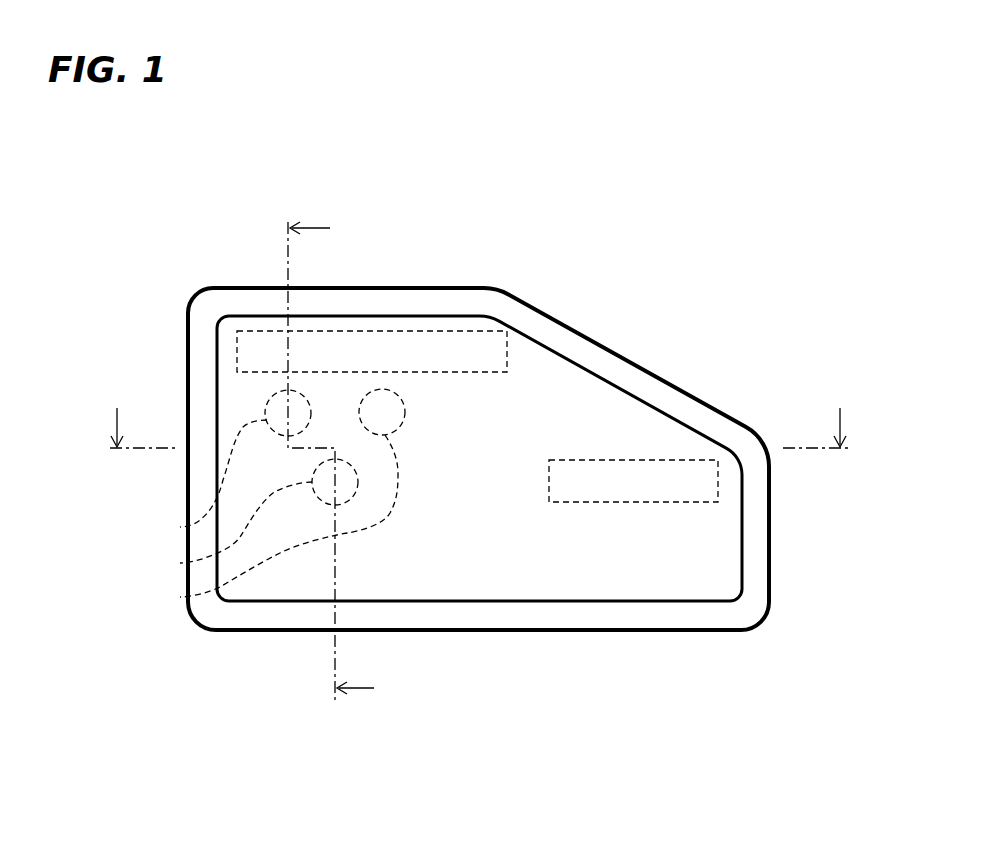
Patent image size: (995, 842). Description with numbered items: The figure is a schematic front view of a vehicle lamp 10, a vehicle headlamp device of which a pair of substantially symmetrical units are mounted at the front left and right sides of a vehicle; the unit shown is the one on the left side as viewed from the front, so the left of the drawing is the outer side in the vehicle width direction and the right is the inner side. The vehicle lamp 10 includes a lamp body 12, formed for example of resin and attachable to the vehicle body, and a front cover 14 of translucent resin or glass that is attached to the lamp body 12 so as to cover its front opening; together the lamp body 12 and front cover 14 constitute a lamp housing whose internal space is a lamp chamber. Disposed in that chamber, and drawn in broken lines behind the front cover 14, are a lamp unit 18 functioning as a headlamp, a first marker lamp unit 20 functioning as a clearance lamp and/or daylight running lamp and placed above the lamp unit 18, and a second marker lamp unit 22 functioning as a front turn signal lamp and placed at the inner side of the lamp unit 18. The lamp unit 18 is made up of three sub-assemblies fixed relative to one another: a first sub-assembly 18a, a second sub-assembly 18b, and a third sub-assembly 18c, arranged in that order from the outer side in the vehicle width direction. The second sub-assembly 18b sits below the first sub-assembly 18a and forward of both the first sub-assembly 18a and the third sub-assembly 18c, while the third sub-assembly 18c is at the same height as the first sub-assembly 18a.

The vehicle lamp 10 is at (466, 789).
The lamp body 12 is at (242, 287).
The front cover 14 is at (666, 592).
The lamp unit 18 is at (108, 515).
The first sub-assembly 18a is at (180, 527).
The second sub-assembly 18b is at (180, 563).
The third sub-assembly 18c is at (180, 597).
The first marker lamp unit 20 is at (507, 356).
The second marker lamp unit 22 is at (677, 460).